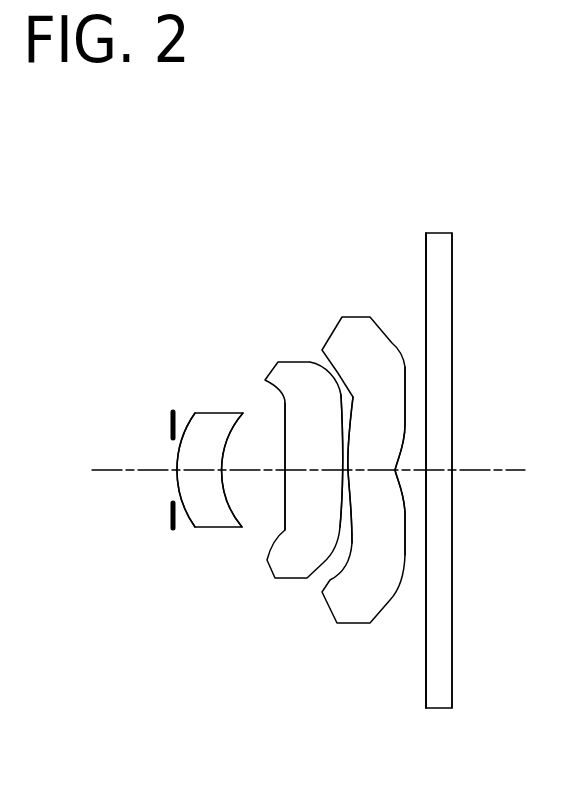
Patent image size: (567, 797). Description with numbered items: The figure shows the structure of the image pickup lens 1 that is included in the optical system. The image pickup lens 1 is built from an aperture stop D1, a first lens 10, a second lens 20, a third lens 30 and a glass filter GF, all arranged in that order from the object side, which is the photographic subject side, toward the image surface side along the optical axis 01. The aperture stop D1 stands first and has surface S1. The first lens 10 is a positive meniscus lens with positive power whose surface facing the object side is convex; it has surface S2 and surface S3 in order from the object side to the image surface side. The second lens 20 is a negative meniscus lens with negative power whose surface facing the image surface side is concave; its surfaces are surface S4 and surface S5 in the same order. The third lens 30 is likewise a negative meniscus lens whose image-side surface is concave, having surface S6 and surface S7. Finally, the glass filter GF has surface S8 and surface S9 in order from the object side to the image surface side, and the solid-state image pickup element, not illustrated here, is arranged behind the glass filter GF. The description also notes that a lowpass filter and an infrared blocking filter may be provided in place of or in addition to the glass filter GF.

The image pickup lens 1 is at (507, 190).
The optical axis 01 is at (113, 470).
The aperture stop D1 is at (173, 412).
The first lens 10 is at (217, 410).
The second lens 20 is at (290, 360).
The third lens 30 is at (342, 313).
The glass filter GF is at (435, 232).
The surface of aperture stop S1 is at (170, 521).
The object-side surface of first lens S2 is at (192, 528).
The image-side surface of first lens S3 is at (230, 442).
The object-side surface of second lens S4 is at (283, 515).
The image-side surface of second lens S5 is at (350, 485).
The object-side surface of third lens S6 is at (357, 517).
The image-side surface of third lens S7 is at (400, 450).
The object-side surface of glass filter S8 is at (425, 670).
The image-side surface of glass filter S9 is at (455, 672).